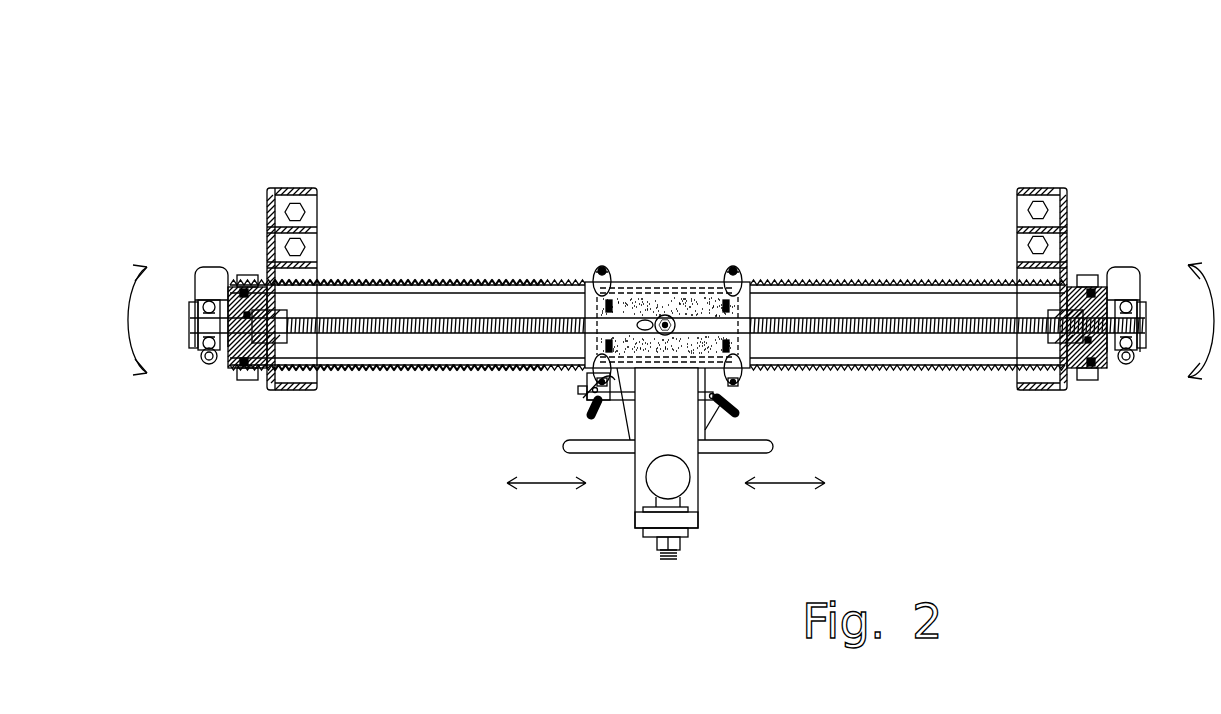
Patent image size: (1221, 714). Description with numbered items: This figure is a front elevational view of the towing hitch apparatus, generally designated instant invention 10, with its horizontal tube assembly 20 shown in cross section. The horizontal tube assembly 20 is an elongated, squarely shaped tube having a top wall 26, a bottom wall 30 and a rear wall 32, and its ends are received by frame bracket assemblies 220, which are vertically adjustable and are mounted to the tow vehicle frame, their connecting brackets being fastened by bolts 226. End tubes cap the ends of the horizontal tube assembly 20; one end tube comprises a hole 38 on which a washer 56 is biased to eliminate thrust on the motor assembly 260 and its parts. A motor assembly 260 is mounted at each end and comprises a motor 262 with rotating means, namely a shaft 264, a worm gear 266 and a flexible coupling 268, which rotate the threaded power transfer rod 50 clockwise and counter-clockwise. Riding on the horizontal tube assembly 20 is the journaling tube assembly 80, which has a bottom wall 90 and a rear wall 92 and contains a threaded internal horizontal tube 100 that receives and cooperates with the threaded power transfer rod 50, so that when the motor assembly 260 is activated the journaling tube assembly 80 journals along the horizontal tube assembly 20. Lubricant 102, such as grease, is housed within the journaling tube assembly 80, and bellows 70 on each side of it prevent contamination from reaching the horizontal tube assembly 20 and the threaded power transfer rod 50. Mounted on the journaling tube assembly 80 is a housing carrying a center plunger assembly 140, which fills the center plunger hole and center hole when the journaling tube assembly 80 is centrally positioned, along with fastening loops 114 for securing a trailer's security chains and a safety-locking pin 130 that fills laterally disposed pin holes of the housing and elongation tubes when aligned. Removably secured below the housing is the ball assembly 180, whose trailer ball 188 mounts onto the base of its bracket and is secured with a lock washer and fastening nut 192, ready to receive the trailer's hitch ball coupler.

The instant invention 10 is at (421, 119).
The horizontal tube assembly 20 is at (469, 284).
The top wall 26 is at (425, 292).
The bottom wall 30 is at (345, 358).
The rear wall 32 is at (430, 352).
The hole 38 is at (1130, 350).
The threaded power transfer rod 50 is at (355, 322).
The washer 56 is at (259, 302).
The bellows 70 is at (538, 280).
The journaling tube assembly 80 is at (681, 281).
The bottom wall 90 is at (587, 395).
The rear wall 92 is at (592, 342).
The threaded internal horizontal tube 100 is at (592, 320).
The lubricant 102 is at (644, 300).
The fastening loops 114 is at (575, 447).
The safety-locking pin 130 is at (741, 415).
The center plunger assembly 140 is at (683, 305).
The ball assembly 180 is at (634, 521).
The trailer ball 188 is at (655, 478).
The fastening nut 192 is at (655, 546).
The frame bracket assembly 220 is at (1067, 208).
The bolts 226 is at (1050, 248).
The motor assembly 260 is at (217, 273).
The motor 262 is at (218, 282).
The shaft 264 is at (248, 333).
The worm gear 266 is at (205, 350).
The flexible coupling 268 is at (266, 345).